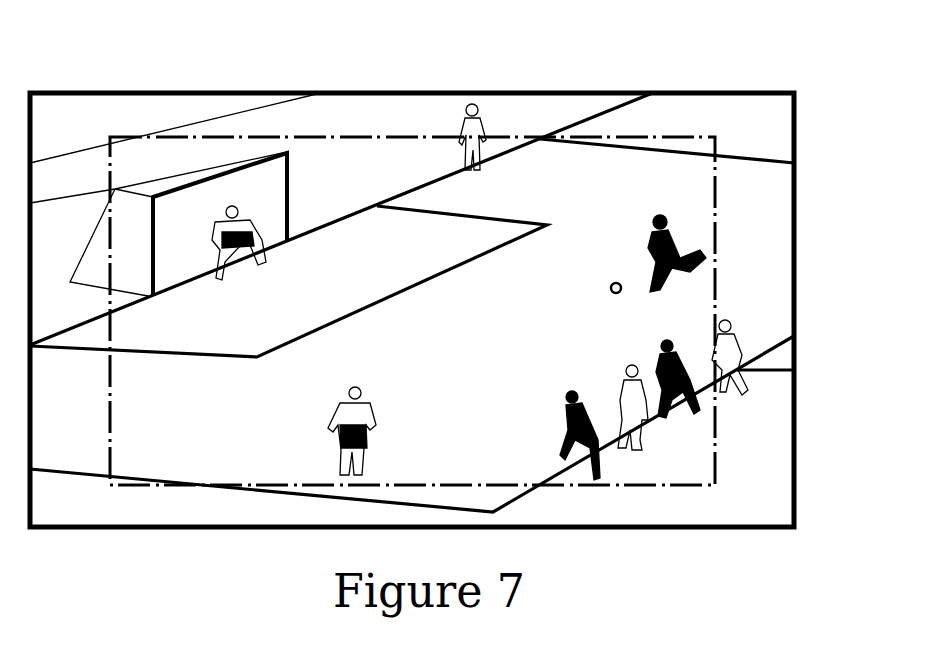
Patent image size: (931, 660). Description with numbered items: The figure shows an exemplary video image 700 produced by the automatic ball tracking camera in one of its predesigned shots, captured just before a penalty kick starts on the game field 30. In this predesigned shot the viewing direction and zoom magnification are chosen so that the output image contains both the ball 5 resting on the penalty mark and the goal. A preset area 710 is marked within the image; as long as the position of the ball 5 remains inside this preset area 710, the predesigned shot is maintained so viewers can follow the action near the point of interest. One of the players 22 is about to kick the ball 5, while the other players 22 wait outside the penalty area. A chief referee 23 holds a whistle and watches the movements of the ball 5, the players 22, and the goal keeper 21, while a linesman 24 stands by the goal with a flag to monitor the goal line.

The video image 700 is at (703, 92).
The preset area 710 is at (717, 260).
The game field 30 is at (361, 212).
The goal keeper 21 is at (260, 222).
The players 22 is at (563, 402).
The chief referee 23 is at (368, 417).
The linesman 24 is at (490, 150).
The ball 5 is at (609, 288).